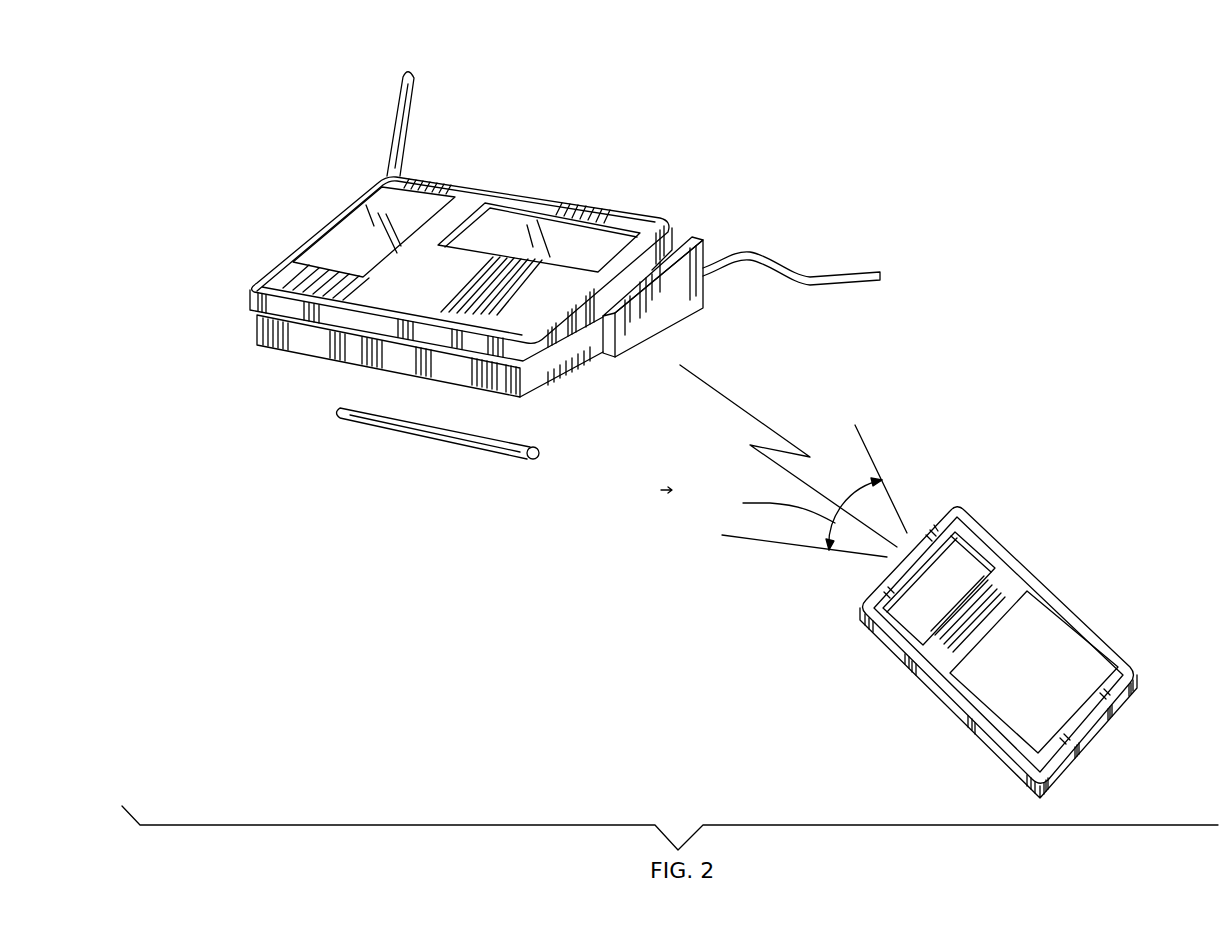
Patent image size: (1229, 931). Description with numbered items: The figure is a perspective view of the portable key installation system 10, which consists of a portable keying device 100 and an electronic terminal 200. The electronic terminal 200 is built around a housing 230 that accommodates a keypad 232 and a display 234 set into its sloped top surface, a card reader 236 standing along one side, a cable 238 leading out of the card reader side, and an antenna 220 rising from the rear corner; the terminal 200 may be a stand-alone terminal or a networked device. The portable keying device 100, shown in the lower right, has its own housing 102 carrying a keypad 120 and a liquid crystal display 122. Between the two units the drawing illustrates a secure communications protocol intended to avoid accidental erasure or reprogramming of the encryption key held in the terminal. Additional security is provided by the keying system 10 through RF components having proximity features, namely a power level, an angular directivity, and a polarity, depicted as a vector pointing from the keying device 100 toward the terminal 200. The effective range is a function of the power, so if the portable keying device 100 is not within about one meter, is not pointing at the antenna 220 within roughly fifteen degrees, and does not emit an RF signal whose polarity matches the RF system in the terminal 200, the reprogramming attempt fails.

The portable key installation system 10 is at (1094, 110).
The portable keying device 100 is at (1080, 461).
The housing 102 is at (1120, 667).
The keypad 120 is at (1053, 642).
The liquid crystal display 122 is at (975, 563).
The electronic terminal 200 is at (238, 146).
The antenna 220 is at (411, 90).
The housing 230 is at (247, 297).
The keypad 232 is at (337, 240).
The display 234 is at (580, 245).
The card reader 236 is at (680, 313).
The cable 238 is at (792, 265).